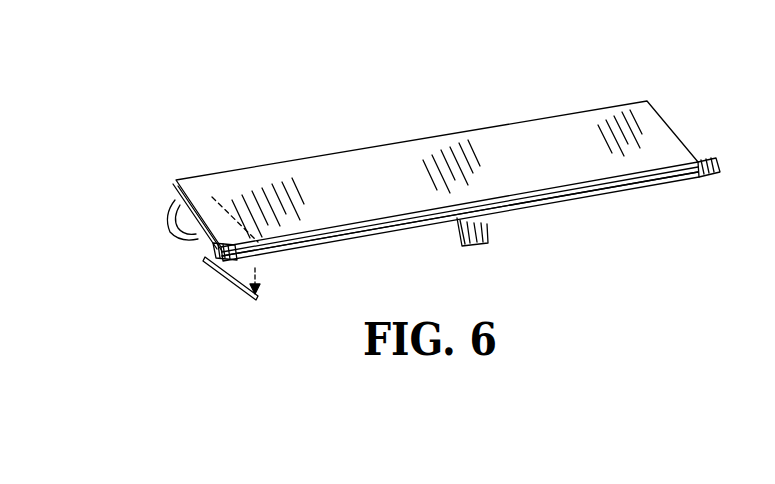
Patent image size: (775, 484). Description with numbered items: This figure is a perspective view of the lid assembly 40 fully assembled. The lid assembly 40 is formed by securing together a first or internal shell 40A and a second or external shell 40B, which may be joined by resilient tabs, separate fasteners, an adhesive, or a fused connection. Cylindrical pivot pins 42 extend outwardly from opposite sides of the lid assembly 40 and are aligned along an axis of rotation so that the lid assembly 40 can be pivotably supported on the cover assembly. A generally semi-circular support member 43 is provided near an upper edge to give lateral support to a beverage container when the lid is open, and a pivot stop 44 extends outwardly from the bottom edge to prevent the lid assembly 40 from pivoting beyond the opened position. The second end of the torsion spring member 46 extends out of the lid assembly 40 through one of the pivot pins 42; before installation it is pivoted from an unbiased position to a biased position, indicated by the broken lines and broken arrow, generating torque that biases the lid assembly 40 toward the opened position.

The lid assembly 40 is at (547, 118).
The first or internal shell 40A is at (630, 196).
The second or external shell 40B is at (307, 177).
The pivot pin 42 is at (717, 158).
The support member 43 is at (170, 222).
The pivot stop 44 is at (488, 228).
The spring member 46 is at (228, 290).